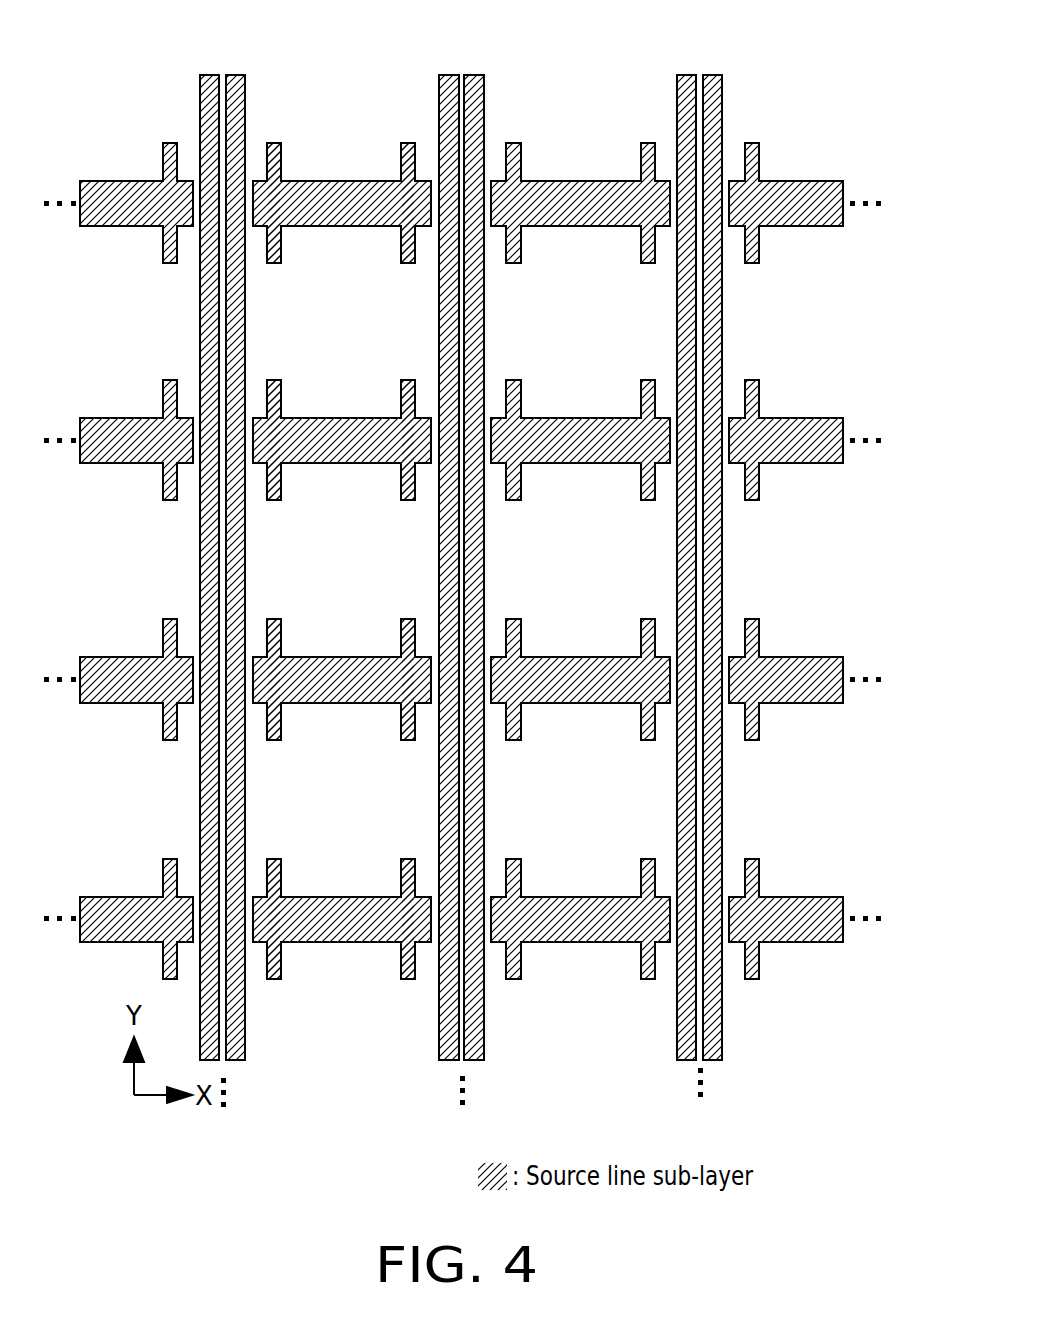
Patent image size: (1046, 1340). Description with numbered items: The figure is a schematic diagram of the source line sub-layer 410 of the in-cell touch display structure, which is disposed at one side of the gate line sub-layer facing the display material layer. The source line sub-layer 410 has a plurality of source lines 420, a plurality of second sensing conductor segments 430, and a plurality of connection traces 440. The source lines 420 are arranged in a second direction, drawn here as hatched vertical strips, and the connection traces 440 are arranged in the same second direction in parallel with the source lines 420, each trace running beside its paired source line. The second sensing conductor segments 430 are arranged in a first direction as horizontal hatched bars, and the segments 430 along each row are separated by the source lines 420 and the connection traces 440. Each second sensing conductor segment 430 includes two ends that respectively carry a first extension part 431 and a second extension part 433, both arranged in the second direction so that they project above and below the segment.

The source line sub-layer 410 is at (87, 33).
The source lines 420 is at (240, 74).
The second sensing conductor segments 430 is at (120, 187).
The first extension part 431 is at (277, 147).
The second extension part 433 is at (411, 147).
The connection traces 440 is at (208, 74).